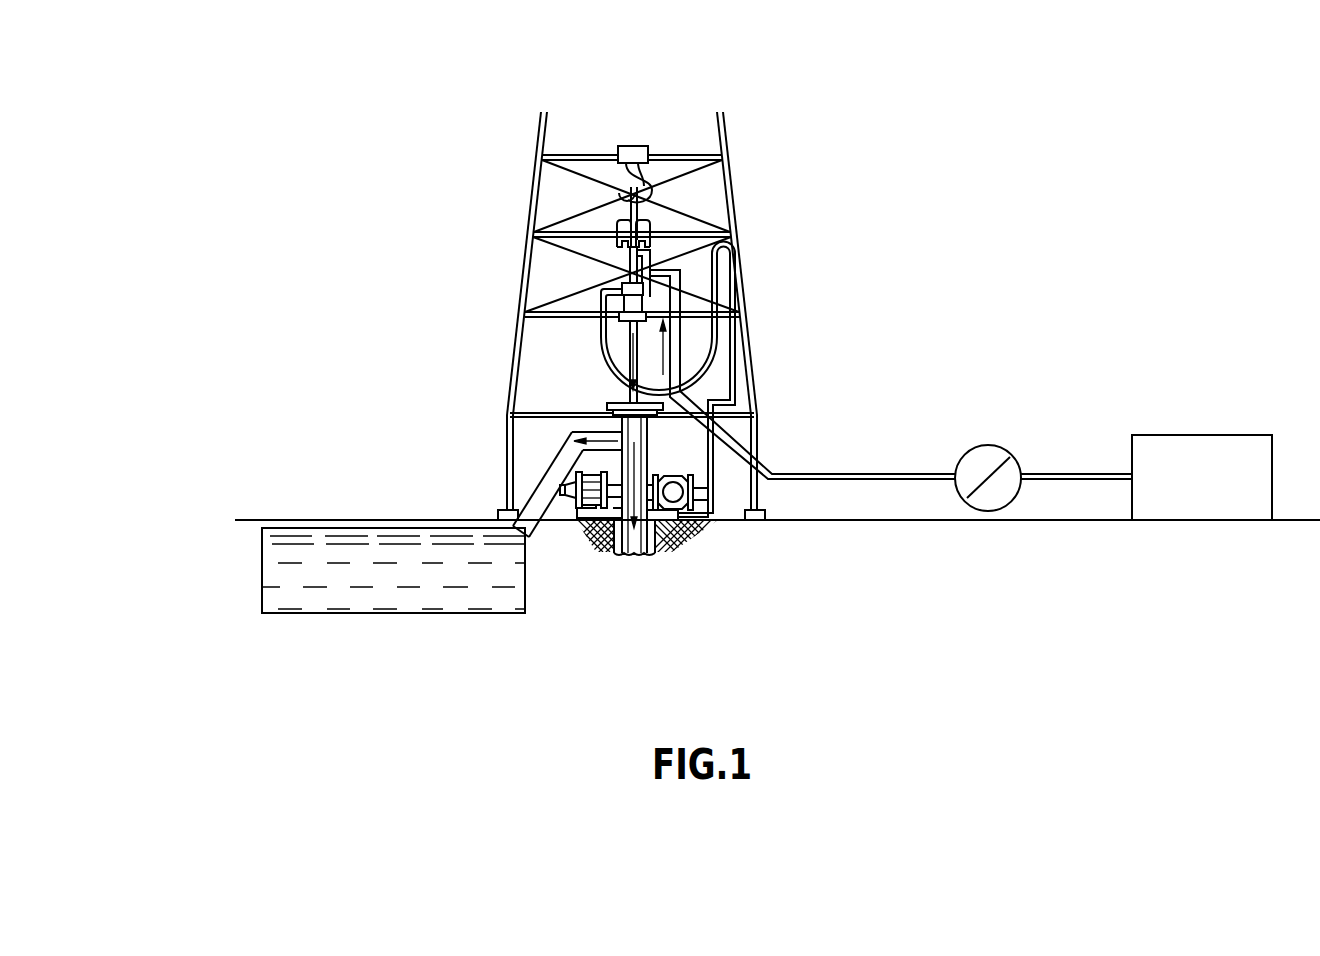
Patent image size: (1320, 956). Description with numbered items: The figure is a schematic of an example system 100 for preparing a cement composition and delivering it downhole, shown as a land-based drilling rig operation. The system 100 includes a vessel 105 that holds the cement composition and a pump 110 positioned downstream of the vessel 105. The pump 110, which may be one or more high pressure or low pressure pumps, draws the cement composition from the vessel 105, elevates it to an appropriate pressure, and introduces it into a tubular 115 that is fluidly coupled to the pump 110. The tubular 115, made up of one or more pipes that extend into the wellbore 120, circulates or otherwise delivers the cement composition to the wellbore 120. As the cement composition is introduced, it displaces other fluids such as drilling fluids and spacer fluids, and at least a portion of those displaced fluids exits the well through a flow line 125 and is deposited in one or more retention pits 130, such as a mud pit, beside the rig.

The system 100 is at (977, 157).
The vessel 105 is at (1173, 435).
The pump 110 is at (993, 446).
The tubular 115 is at (760, 458).
The wellbore 120 is at (658, 558).
The flow line 125 is at (549, 503).
The retention pit 130 is at (313, 613).